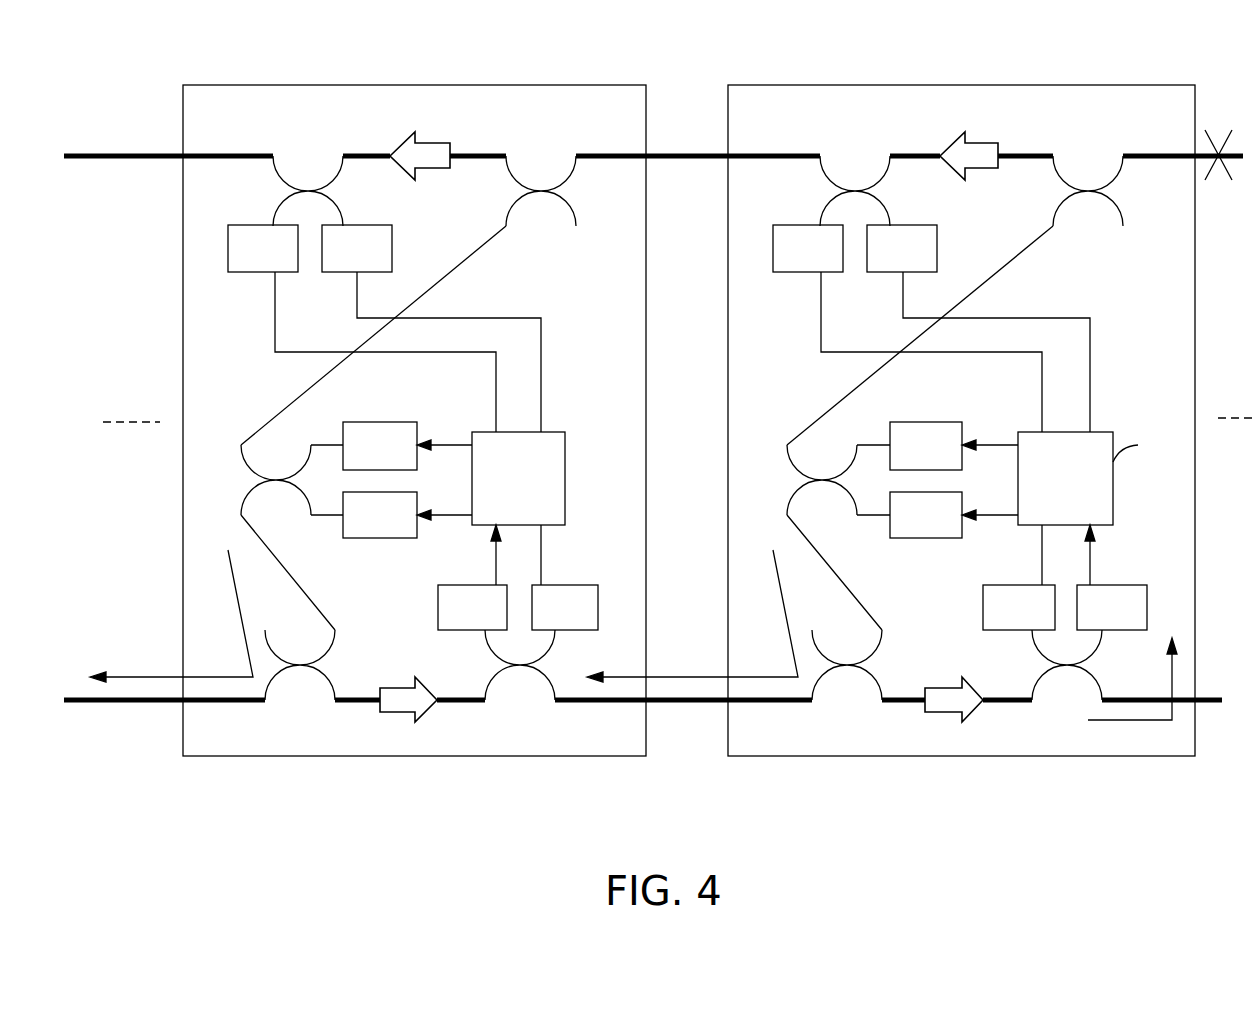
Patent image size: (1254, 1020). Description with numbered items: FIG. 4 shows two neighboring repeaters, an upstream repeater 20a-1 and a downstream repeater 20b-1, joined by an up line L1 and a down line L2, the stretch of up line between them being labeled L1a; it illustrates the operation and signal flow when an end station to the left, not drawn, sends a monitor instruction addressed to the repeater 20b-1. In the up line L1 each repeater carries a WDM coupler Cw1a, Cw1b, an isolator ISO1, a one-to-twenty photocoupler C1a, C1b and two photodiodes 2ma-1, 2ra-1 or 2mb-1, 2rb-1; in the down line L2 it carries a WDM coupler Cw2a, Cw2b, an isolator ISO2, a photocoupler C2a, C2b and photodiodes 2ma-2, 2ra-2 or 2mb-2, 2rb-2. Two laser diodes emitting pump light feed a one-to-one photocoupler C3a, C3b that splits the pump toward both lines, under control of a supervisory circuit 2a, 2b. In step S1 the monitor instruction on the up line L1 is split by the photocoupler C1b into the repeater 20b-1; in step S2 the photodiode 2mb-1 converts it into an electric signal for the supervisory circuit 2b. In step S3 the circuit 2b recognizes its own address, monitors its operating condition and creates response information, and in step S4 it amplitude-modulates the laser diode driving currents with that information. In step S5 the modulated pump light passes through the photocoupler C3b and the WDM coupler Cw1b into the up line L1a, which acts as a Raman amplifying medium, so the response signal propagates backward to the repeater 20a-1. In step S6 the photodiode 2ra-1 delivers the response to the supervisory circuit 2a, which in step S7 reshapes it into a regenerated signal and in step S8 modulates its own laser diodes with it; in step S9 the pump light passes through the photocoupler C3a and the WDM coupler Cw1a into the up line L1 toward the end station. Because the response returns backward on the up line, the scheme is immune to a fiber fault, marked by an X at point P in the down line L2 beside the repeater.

The repeater 20a-1 is at (379, 85).
The repeater 20b-1 is at (925, 85).
The up line L1 is at (78, 712).
The down line L2 is at (78, 153).
The up line L1a is at (668, 706).
The isolator ISO1 is at (402, 716).
The isolator ISO2 is at (424, 142).
The photocoupler C1a is at (493, 690).
The photocoupler C1b is at (1097, 645).
The photocoupler C2a is at (286, 212).
The photocoupler C2b is at (824, 212).
The photocoupler C3a is at (245, 490).
The photocoupler C3b is at (789, 490).
The WDM coupler Cw1a is at (268, 690).
The WDM coupler Cw1b is at (815, 690).
The WDM coupler Cw2a is at (573, 182).
The WDM coupler Cw2b is at (1118, 182).
The supervisory circuit 2a is at (553, 432).
The supervisory circuit 2b is at (1100, 432).
The photodiode 2ma-1 is at (554, 582).
The photodiode 2ma-2 is at (242, 277).
The photodiode 2mb-1 is at (1094, 582).
The photodiode 2mb-2 is at (788, 277).
The photodiode 2ra-1 is at (437, 608).
The photodiode 2ra-2 is at (362, 221).
The photodiode 2rb-1 is at (1019, 582).
The photodiode 2rb-2 is at (910, 221).
The step S1 is at (1176, 670).
The step S2 is at (1093, 547).
The step S3 is at (1146, 449).
The step S4 is at (994, 446).
The step S5 is at (692, 675).
The step S6 is at (494, 551).
The step S7 is at (567, 470).
The step S8 is at (447, 446).
The step S9 is at (160, 676).
The fault point P is at (1216, 128).